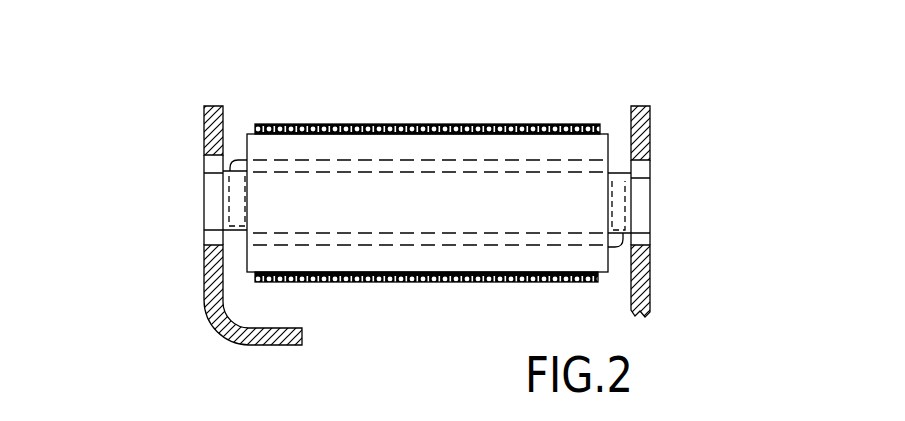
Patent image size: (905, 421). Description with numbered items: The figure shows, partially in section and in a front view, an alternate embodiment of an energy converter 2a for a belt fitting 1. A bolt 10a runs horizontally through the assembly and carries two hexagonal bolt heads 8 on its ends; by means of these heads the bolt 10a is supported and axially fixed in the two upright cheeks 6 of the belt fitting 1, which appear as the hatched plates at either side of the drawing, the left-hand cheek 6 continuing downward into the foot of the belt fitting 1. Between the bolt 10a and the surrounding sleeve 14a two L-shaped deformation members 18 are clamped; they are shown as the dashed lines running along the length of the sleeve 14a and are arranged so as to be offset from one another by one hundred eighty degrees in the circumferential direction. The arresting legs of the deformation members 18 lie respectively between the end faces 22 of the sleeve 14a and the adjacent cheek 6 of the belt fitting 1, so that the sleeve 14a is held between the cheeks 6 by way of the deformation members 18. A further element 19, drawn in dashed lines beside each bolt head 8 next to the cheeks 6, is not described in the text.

The belt fitting 1 is at (208, 298).
The cheeks 6 is at (210, 138).
The hexagonal bolt heads 8 is at (212, 211).
The bearing insert 19 is at (232, 188).
The end faces 22 is at (247, 144).
The energy converter 2a is at (401, 110).
The L-shaped deformation members 18 is at (337, 166).
The bolt 10a is at (478, 205).
The sleeve 14a is at (562, 148).